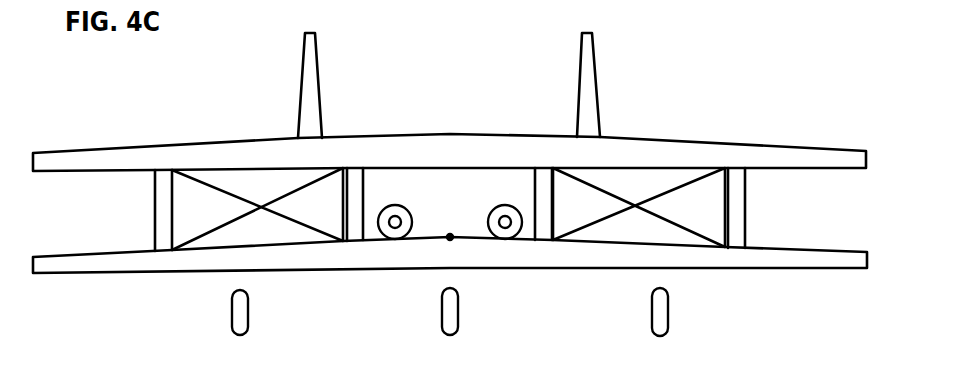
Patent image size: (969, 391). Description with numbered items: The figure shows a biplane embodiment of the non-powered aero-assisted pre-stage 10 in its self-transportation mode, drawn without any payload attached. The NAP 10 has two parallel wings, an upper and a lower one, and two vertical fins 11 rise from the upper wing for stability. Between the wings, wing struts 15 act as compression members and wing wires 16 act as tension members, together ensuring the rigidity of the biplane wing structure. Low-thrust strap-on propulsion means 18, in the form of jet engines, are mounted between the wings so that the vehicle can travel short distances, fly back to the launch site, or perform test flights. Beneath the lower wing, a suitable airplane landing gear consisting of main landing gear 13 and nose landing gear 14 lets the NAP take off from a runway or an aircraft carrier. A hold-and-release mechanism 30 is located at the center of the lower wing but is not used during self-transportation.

The non-powered aero-assisted pre-stage 10 is at (728, 142).
The vertical stabilizer 11 is at (318, 73).
The main landing gear 13 is at (230, 320).
The nose landing gear 14 is at (440, 312).
The wing struts 15 is at (175, 195).
The wing wires 16 is at (320, 183).
The low-power strap-on self-transportation propulsion means 18 is at (383, 235).
The hold-and-release mechanism 30 is at (452, 242).